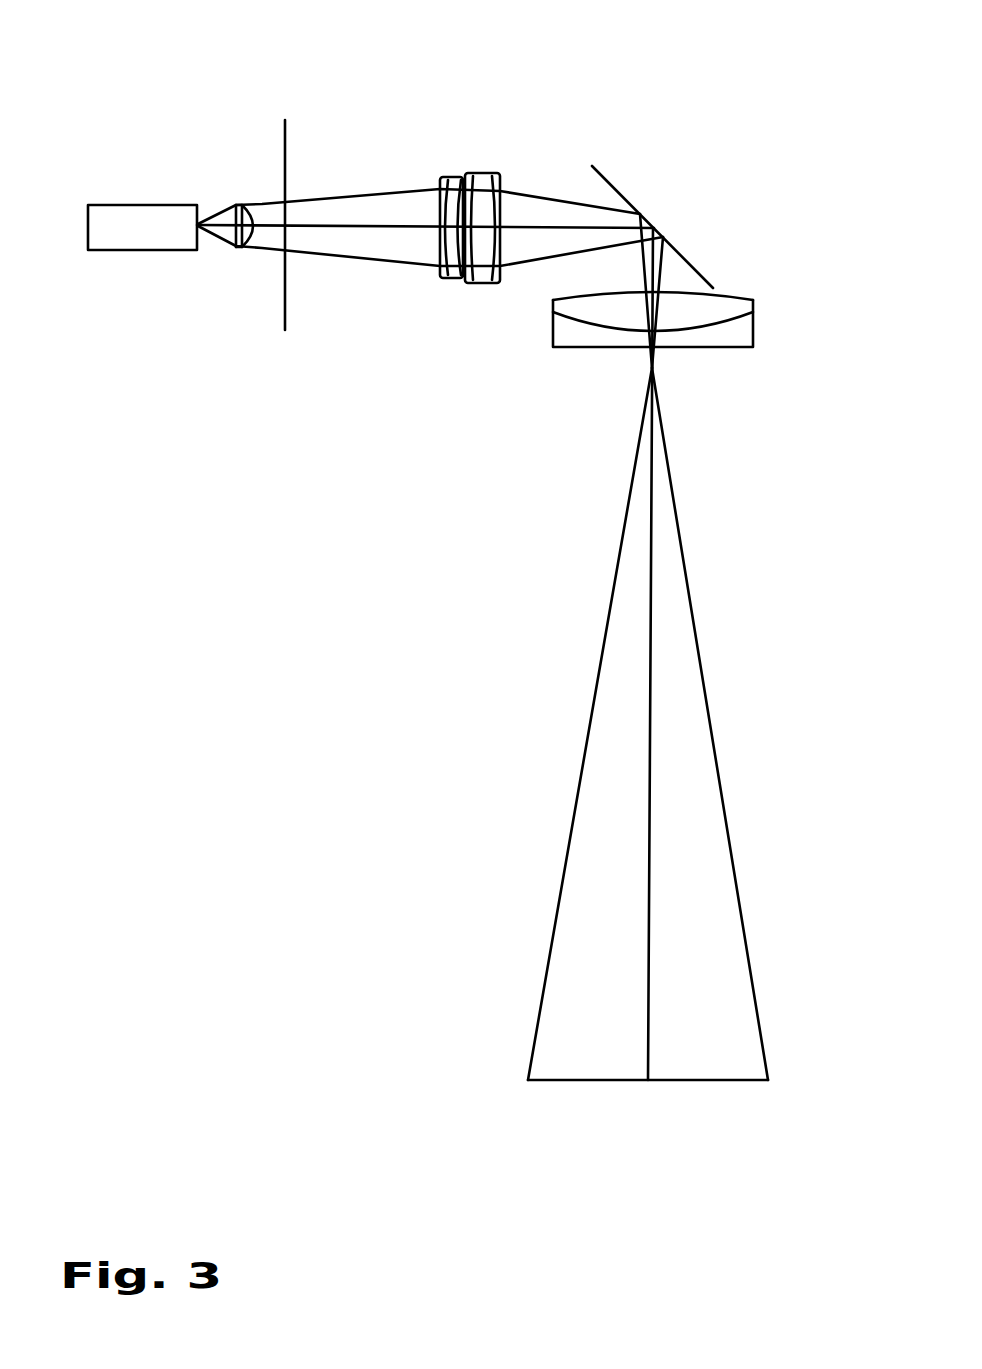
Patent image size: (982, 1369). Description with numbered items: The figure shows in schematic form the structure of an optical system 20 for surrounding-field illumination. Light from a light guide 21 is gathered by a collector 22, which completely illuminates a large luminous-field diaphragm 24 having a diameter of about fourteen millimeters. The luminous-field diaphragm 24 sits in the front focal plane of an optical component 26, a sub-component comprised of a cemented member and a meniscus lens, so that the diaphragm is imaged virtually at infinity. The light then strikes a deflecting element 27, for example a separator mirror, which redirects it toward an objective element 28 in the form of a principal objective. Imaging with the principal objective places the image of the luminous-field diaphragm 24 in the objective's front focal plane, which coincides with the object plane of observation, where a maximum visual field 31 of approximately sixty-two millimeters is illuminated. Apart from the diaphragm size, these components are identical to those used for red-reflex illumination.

The optical scanning arrangement 20 is at (168, 124).
The light guide 21 is at (133, 228).
The collector 22 is at (233, 249).
The luminous-field diaphragm 24 is at (288, 158).
The optical component 26 is at (461, 296).
The deflecting element 27 is at (690, 264).
The objective element 28 is at (727, 335).
The maximum visual field 31 is at (700, 1082).